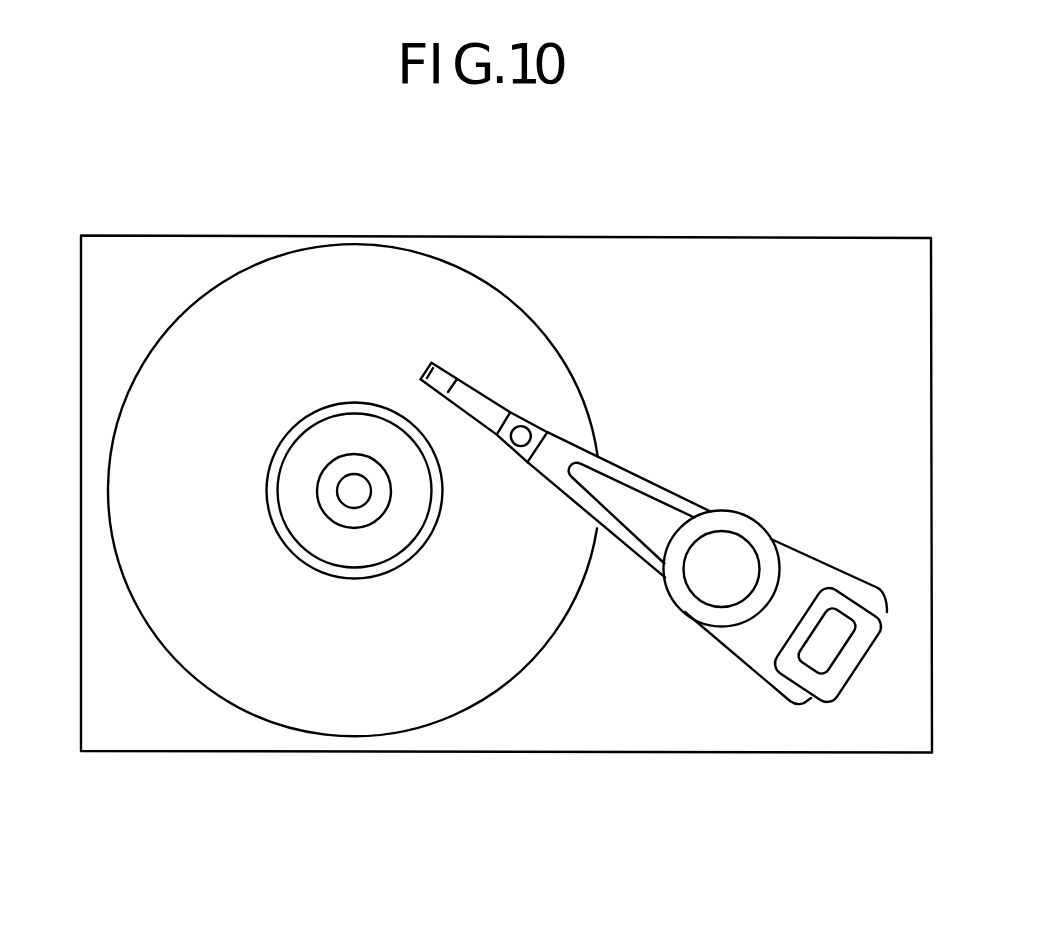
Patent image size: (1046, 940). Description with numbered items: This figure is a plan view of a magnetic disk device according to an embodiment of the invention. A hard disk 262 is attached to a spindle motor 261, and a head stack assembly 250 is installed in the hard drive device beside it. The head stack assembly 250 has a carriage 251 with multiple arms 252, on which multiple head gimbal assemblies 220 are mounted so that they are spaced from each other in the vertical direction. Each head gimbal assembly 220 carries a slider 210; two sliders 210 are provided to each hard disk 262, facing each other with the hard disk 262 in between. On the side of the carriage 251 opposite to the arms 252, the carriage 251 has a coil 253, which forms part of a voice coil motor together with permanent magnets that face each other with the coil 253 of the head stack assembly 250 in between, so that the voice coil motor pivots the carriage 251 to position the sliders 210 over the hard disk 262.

The slider 210 is at (442, 363).
The head gimbal assembly 220 is at (492, 430).
The head stack assembly 250 is at (730, 648).
The carriage 251 is at (737, 512).
The arm 252 is at (640, 567).
The coil 253 is at (883, 700).
The spindle motor 261 is at (352, 507).
The hard disk 262 is at (262, 718).